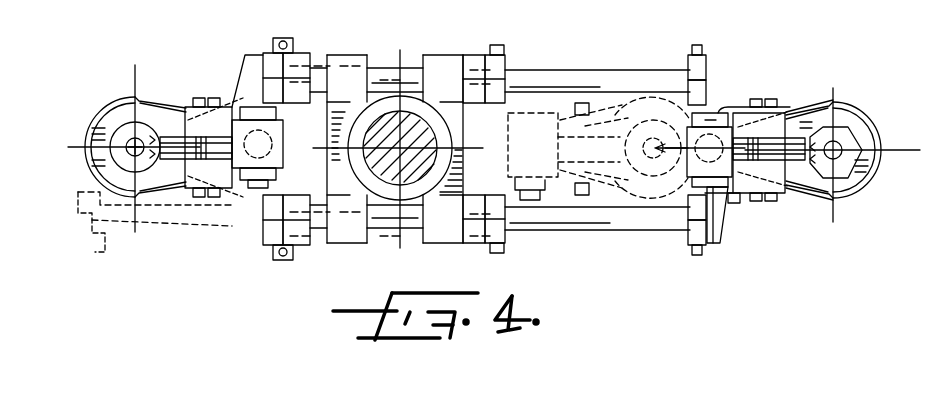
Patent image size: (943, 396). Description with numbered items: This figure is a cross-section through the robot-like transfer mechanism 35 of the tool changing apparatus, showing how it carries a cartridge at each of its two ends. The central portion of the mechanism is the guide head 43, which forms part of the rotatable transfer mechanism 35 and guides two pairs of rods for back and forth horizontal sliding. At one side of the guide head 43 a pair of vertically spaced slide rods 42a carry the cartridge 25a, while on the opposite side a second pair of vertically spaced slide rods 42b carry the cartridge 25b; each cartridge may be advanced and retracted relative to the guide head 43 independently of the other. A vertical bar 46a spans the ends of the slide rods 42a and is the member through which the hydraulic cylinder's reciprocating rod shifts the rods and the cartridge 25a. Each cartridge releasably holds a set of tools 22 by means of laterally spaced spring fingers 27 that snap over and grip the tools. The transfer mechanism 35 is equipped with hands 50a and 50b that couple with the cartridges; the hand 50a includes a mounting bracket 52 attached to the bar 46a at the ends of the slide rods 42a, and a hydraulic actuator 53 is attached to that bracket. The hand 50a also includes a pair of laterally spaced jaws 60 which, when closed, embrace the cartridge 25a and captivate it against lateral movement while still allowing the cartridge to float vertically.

The tools 22 is at (125, 128).
The cartridge 25a is at (772, 133).
The cartridge 25b is at (194, 120).
The spring fingers 27 is at (805, 104).
The transfer mechanism 35 is at (466, 52).
The slide rods 42a is at (588, 230).
The slide rods 42b is at (560, 70).
The guide head 43 is at (433, 222).
The vertical bar 46a is at (692, 236).
The hand 50a is at (740, 210).
The hand 50b is at (228, 197).
The mounting bracket 52 is at (722, 228).
The hydraulic actuator 53 is at (697, 133).
The jaws 60 is at (733, 107).